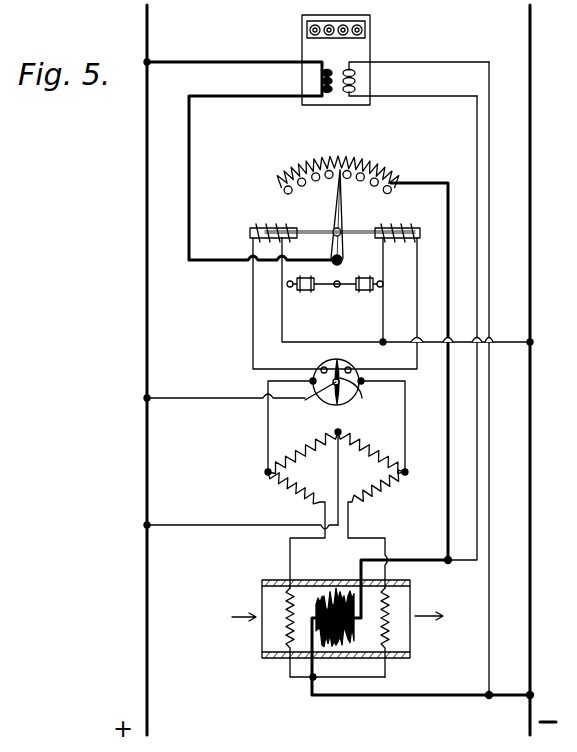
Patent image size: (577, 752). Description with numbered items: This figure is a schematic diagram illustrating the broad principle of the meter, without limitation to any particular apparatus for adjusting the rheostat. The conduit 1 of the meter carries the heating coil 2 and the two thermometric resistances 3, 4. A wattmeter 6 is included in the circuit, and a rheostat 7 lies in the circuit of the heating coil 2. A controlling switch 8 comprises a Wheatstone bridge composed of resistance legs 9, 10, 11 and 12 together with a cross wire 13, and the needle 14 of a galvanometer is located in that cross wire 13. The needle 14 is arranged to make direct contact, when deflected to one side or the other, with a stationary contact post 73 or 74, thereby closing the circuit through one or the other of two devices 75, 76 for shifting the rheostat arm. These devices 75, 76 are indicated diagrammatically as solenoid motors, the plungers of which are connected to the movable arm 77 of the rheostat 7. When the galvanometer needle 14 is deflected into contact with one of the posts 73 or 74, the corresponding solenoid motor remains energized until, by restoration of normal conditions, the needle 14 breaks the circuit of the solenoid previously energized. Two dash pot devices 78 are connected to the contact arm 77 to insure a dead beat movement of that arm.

The conduit 1 is at (363, 658).
The heating coil 2 is at (347, 640).
The thermometric resistance 3 is at (287, 636).
The thermometric resistance 4 is at (388, 640).
The wattmeter 6 is at (364, 57).
The rheostat 7 is at (362, 354).
The controlling switch 8 is at (323, 507).
The resistance leg 9 is at (303, 453).
The resistance leg 10 is at (371, 453).
The resistance leg 11 is at (296, 530).
The resistance leg 12 is at (376, 529).
The cross wire 13 is at (272, 425).
The galvanometer needle 14 is at (362, 398).
The stationary contact post 73 is at (320, 368).
The stationary contact post 74 is at (352, 368).
The solenoid motor 75 is at (390, 285).
The solenoid motor 76 is at (454, 273).
The movable arm 77 is at (333, 217).
The dash pot device 78 is at (369, 292).